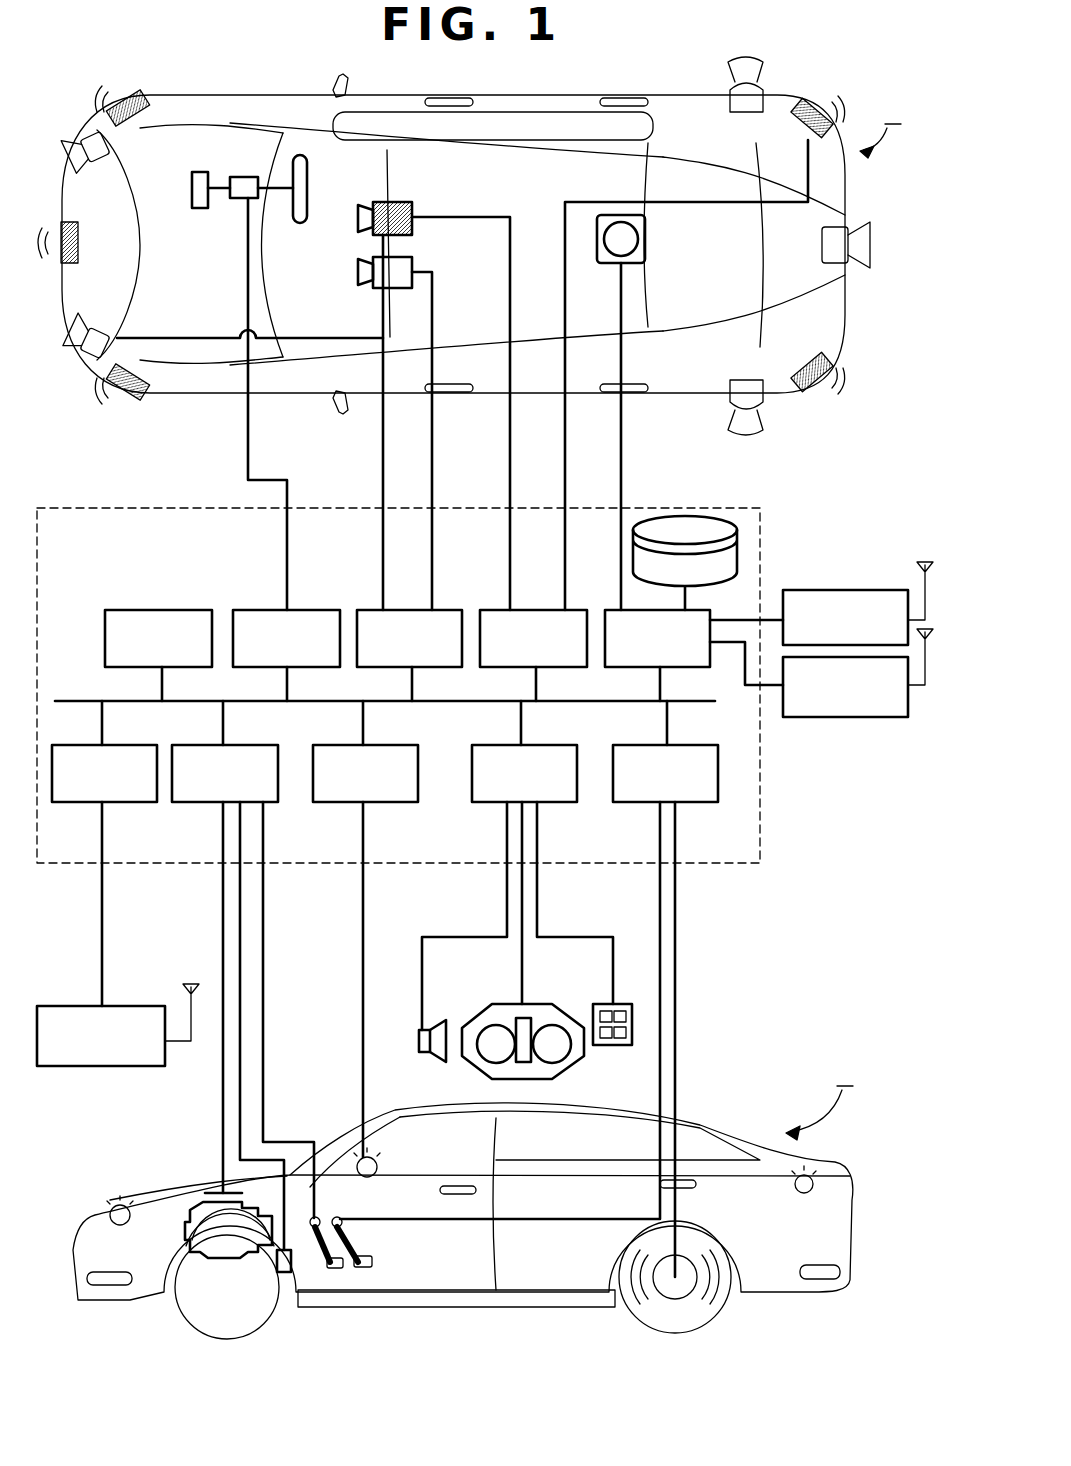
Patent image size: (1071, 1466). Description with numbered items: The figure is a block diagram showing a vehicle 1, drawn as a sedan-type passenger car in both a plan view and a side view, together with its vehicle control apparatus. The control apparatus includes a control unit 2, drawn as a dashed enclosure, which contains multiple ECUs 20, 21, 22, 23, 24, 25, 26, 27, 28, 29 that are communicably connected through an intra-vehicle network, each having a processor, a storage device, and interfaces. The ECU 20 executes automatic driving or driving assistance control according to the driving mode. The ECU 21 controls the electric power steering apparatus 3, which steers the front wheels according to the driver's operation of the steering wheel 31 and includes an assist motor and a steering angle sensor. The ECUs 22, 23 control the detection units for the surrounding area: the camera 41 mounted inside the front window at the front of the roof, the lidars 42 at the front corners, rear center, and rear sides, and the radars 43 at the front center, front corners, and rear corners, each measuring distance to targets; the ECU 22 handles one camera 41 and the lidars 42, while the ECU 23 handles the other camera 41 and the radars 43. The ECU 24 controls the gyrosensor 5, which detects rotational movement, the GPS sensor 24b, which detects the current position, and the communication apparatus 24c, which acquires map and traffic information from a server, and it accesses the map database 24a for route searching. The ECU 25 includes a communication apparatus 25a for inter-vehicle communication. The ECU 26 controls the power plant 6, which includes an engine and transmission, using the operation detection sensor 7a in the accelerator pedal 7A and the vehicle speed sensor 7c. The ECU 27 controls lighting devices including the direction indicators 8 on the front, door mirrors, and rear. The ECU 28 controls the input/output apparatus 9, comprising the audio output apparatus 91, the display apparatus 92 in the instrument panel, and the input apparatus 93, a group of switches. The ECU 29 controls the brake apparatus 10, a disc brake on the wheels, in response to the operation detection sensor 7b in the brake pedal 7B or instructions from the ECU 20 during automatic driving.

The vehicle 1 is at (481, 706).
The control unit 2 is at (752, 870).
The electric power steering apparatus 3 is at (200, 210).
The steering wheel 31 is at (300, 224).
The camera 41 is at (414, 225).
The lidar 42 is at (100, 170).
The millimeter-wave radar 43 is at (133, 126).
The gyrosensor 5 is at (647, 240).
The ECU 20 is at (190, 608).
The ECU 21 is at (314, 608).
The ECU 22 is at (408, 608).
The ECU 23 is at (534, 608).
The ECU 24 is at (606, 608).
The database 24a is at (686, 515).
The GPS sensor 24b is at (842, 588).
The communication apparatus 24c is at (832, 720).
The ECU 25 is at (132, 804).
The communication apparatus 25a is at (100, 1068).
The ECU 26 is at (200, 804).
The ECU 27 is at (396, 804).
The ECU 28 is at (566, 804).
The ECU 29 is at (700, 804).
The power plant 6 is at (198, 1200).
The operation detection sensor 7a is at (316, 1216).
The accelerator pedal 7A is at (343, 1268).
The operation detection sensor 7b is at (345, 1226).
The brake pedal 7B is at (372, 1260).
The vehicle speed sensor 7c is at (285, 1273).
The direction indicators 8 is at (110, 1212).
The input/output apparatus 9 is at (512, 1051).
The audio output apparatus 91 is at (416, 1030).
The display apparatus 92 is at (480, 1018).
The input apparatus 93 is at (613, 1047).
The brake apparatus 10 is at (680, 1300).